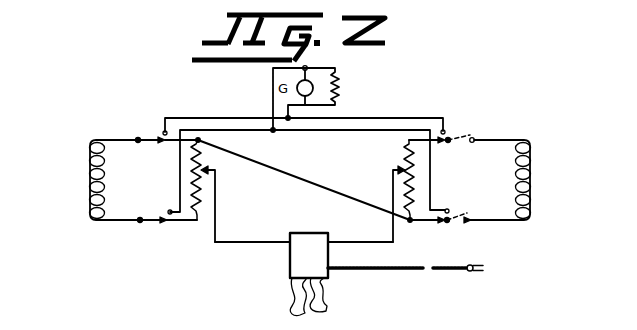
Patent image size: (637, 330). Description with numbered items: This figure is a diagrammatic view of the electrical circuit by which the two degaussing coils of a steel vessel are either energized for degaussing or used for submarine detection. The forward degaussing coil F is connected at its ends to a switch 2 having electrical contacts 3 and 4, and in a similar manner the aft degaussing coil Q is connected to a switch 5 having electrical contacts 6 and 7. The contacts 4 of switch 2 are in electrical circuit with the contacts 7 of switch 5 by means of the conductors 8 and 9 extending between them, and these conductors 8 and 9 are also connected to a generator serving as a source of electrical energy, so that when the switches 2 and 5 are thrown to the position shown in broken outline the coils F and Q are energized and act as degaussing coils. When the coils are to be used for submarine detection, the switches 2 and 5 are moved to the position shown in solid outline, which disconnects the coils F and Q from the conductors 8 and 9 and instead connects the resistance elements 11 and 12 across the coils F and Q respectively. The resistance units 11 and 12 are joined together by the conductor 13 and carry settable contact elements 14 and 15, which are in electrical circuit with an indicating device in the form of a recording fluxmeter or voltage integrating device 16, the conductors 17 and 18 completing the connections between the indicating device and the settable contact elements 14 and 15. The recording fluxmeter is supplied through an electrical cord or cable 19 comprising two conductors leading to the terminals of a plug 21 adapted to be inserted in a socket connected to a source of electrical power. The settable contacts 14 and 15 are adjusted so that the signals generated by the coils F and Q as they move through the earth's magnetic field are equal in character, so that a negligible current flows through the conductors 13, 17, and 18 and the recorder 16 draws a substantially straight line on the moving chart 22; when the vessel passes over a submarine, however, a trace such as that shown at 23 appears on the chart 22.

The switch 2 is at (157, 215).
The electrical contacts 3 is at (165, 144).
The electrical contacts 4 is at (163, 131).
The switch 5 is at (457, 138).
The electrical contacts 6 is at (447, 143).
The electrical contacts 7 is at (446, 130).
The conductor 8 is at (373, 118).
The conductor 9 is at (394, 130).
The resistance element 11 is at (199, 225).
The resistance element 12 is at (404, 153).
The conductor 13 is at (254, 164).
The settable contact element 14 is at (205, 167).
The settable contact element 15 is at (400, 167).
The recording fluxmeter 16 is at (302, 240).
The conductor 17 is at (240, 242).
The conductor 18 is at (372, 242).
The electrical cord or cable 19 is at (395, 270).
The plug 21 is at (470, 272).
The moving chart 22 is at (291, 292).
The trace 23 is at (327, 304).
The degaussing coil F is at (115, 180).
The degaussing coil Q is at (500, 179).